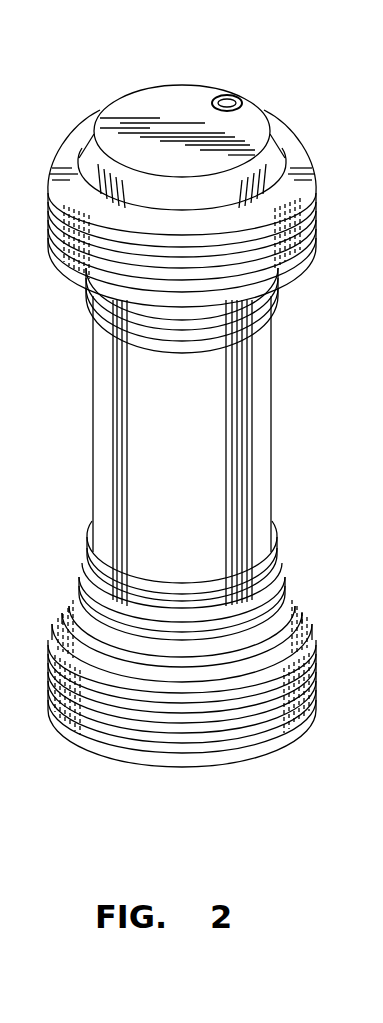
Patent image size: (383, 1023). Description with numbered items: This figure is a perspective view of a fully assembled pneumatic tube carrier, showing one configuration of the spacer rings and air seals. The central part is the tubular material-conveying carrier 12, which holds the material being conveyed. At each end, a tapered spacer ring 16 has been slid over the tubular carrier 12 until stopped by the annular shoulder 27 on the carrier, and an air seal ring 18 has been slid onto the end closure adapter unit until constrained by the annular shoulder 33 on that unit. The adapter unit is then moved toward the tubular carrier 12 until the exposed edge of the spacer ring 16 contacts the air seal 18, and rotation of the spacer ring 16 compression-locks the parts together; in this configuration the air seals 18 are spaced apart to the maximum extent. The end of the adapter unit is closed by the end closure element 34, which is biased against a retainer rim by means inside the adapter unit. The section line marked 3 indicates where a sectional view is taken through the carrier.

The section line for FIG. 3 is at (183, 128).
The tubular material-conveying carrier 12 is at (258, 463).
The tapered spacer ring 16 is at (273, 292).
The air seal ring 18 is at (312, 237).
The annular shoulder 27 is at (273, 310).
The annular shoulder 33 is at (183, 208).
The end closure element 34 is at (253, 117).